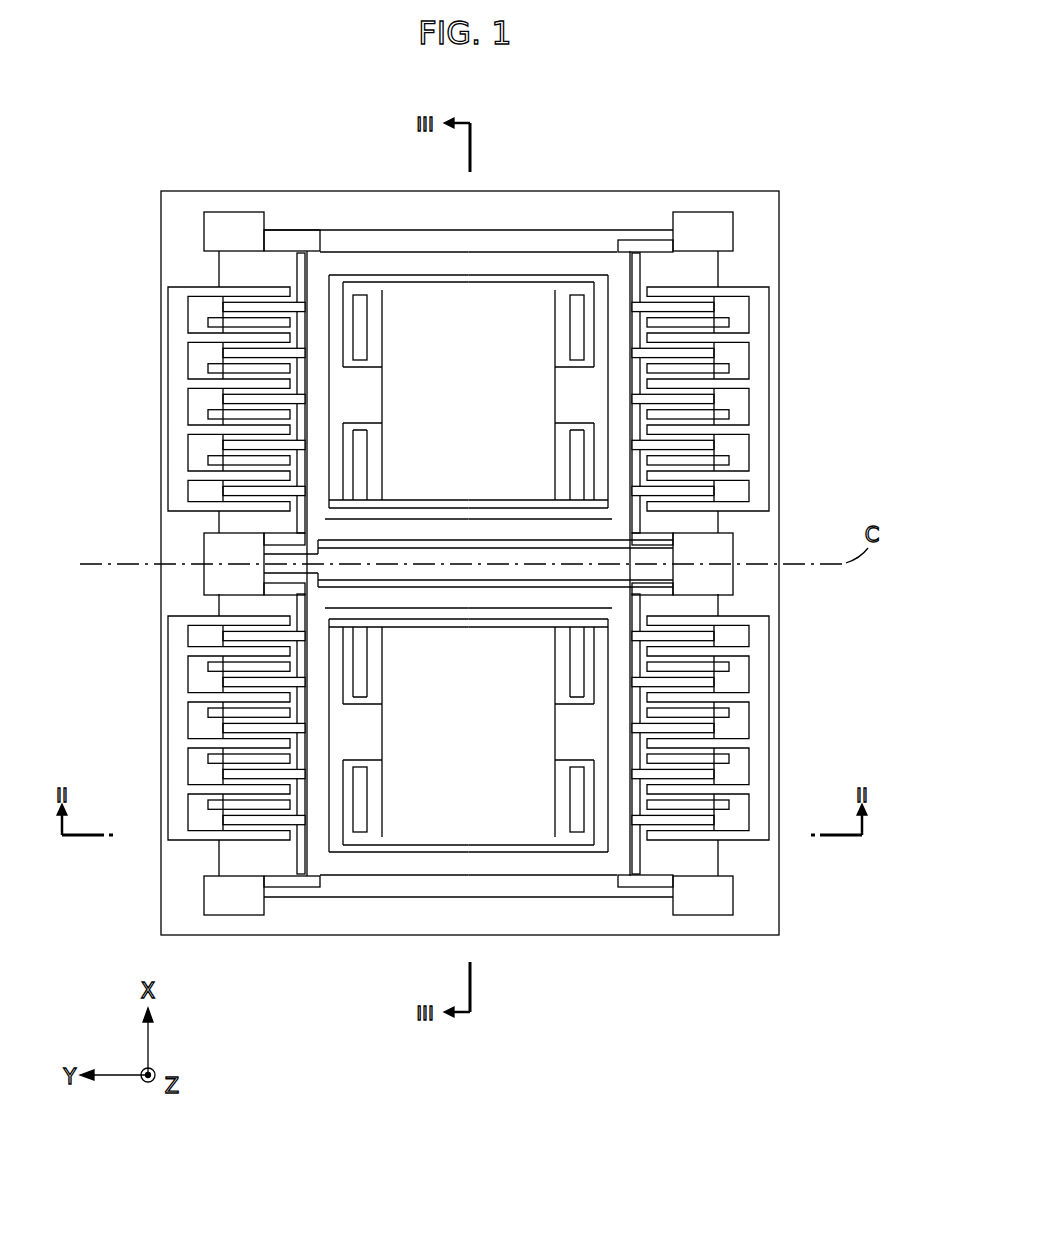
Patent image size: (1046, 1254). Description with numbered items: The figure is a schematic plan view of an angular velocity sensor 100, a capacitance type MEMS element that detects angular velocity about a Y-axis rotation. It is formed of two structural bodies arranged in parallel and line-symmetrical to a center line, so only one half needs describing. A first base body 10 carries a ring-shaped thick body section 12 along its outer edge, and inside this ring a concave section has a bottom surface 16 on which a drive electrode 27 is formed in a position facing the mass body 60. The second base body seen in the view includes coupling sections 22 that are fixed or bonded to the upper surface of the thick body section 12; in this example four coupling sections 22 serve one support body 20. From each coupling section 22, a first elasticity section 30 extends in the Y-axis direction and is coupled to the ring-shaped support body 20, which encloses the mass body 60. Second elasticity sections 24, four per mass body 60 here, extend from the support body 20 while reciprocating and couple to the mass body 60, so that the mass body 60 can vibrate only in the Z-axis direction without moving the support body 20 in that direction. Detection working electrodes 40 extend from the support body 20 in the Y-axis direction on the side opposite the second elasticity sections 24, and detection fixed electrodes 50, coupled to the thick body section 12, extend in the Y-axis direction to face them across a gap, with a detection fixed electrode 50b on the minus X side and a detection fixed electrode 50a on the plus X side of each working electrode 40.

The angular velocity sensor 100 is at (803, 170).
The first base body 10 is at (779, 216).
The thick body section 12 is at (765, 254).
The bottom surface 16 is at (541, 906).
The support body 20 is at (393, 864).
The coupling section 22 is at (728, 552).
The second elasticity section 24 is at (588, 856).
The drive electrode 27 is at (298, 862).
The first elasticity section 30 is at (655, 586).
The detection working electrode 40 is at (468, 563).
The detection fixed electrode 50 is at (469, 563).
The detection fixed electrode 50a is at (469, 565).
The detection fixed electrode 50b is at (469, 564).
The mass body 60 is at (436, 830).